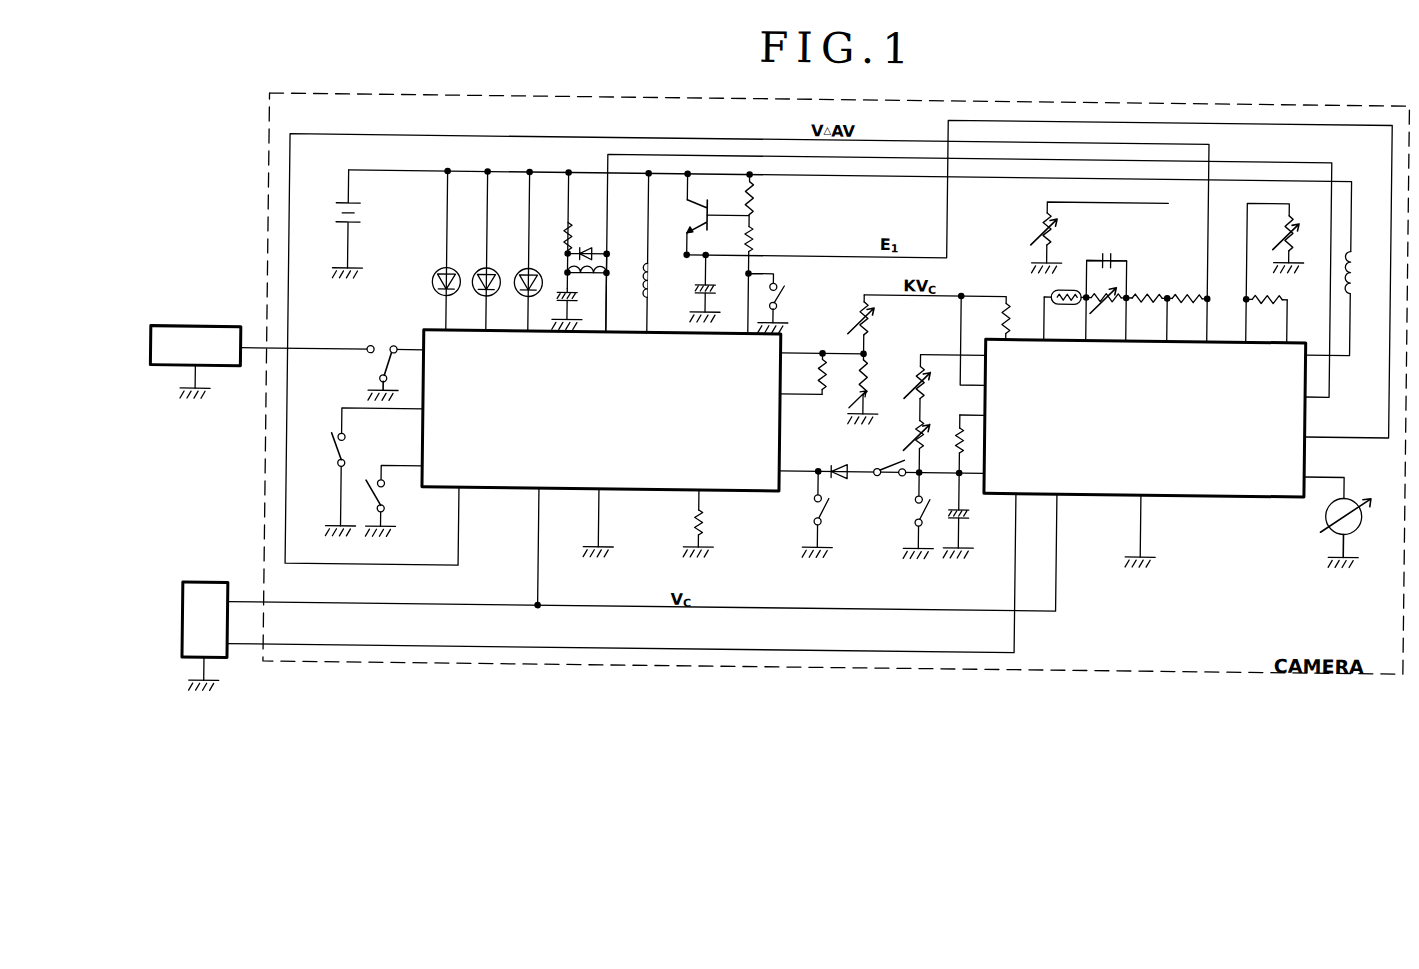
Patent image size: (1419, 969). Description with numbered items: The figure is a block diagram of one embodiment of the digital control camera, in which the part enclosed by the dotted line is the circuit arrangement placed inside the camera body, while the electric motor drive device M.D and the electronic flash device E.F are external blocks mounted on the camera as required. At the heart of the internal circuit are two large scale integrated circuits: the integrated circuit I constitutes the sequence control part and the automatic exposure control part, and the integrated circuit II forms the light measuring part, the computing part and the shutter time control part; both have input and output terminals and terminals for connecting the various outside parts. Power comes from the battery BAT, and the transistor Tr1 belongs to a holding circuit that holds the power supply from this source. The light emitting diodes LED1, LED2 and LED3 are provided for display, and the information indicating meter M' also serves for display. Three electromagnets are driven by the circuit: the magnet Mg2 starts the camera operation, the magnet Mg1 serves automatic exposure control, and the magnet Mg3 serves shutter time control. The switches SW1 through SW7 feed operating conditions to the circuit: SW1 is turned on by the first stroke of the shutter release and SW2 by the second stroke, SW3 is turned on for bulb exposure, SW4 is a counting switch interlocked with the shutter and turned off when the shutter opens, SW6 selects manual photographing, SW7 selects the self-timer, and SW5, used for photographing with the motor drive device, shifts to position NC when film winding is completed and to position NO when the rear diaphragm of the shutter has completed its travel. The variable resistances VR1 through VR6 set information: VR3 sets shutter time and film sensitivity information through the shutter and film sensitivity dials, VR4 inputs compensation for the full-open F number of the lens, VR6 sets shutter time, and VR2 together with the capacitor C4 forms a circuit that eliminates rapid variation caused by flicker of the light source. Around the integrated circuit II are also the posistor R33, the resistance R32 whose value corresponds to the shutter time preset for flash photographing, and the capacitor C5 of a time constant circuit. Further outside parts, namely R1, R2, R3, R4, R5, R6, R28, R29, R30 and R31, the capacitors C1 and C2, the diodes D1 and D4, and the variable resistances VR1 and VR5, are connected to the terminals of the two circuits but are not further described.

The power source battery BAT is at (366, 224).
The light emitting diode LED1 is at (436, 271).
The light emitting diode LED2 is at (476, 271).
The light emitting diode LED3 is at (517, 272).
The resistor R1 is at (740, 197).
The resistor R2 is at (740, 238).
The resistor R3 is at (704, 533).
The resistor R4 is at (558, 236).
The resistor R5 is at (832, 373).
The variable resistor R6 is at (875, 325).
The resistor R28 is at (1020, 319).
The resistor R29 is at (1146, 313).
The resistor R30 is at (1187, 313).
The resistor R31 is at (1266, 314).
The resistance R32 is at (957, 441).
The posistor R33 is at (1065, 311).
The variable resistance VR1 is at (874, 389).
The variable resistance VR2 is at (1106, 310).
The variable resistance VR3 is at (1061, 243).
The variable resistance VR4 is at (1278, 244).
The variable resistance VR5 is at (934, 387).
The variable resistance VR6 is at (933, 446).
The capacitor C1 is at (713, 296).
The capacitor C2 is at (575, 302).
The capacitor C4 is at (1107, 250).
The capacitor C5 is at (967, 516).
The diode D1 is at (591, 243).
The diode D4 is at (842, 461).
The transistor Tr1 is at (688, 216).
The electromagnet Mg1 is at (666, 283).
The electromagnet Mg2 is at (586, 278).
The electromagnet Mg3 is at (1368, 272).
The switch SW1 is at (790, 308).
The switch SW2 is at (833, 514).
The switch SW3 is at (894, 460).
The switch SW4 is at (910, 515).
The switch SW5 is at (381, 363).
The switch SW6 is at (328, 484).
The switch SW7 is at (393, 508).
The integrated circuit I is at (602, 410).
The integrated circuit II is at (1145, 418).
The information indicating meter M' is at (1352, 533).
The electric motor drive device M.D is at (195, 362).
The electronic flash device E.F is at (205, 636).